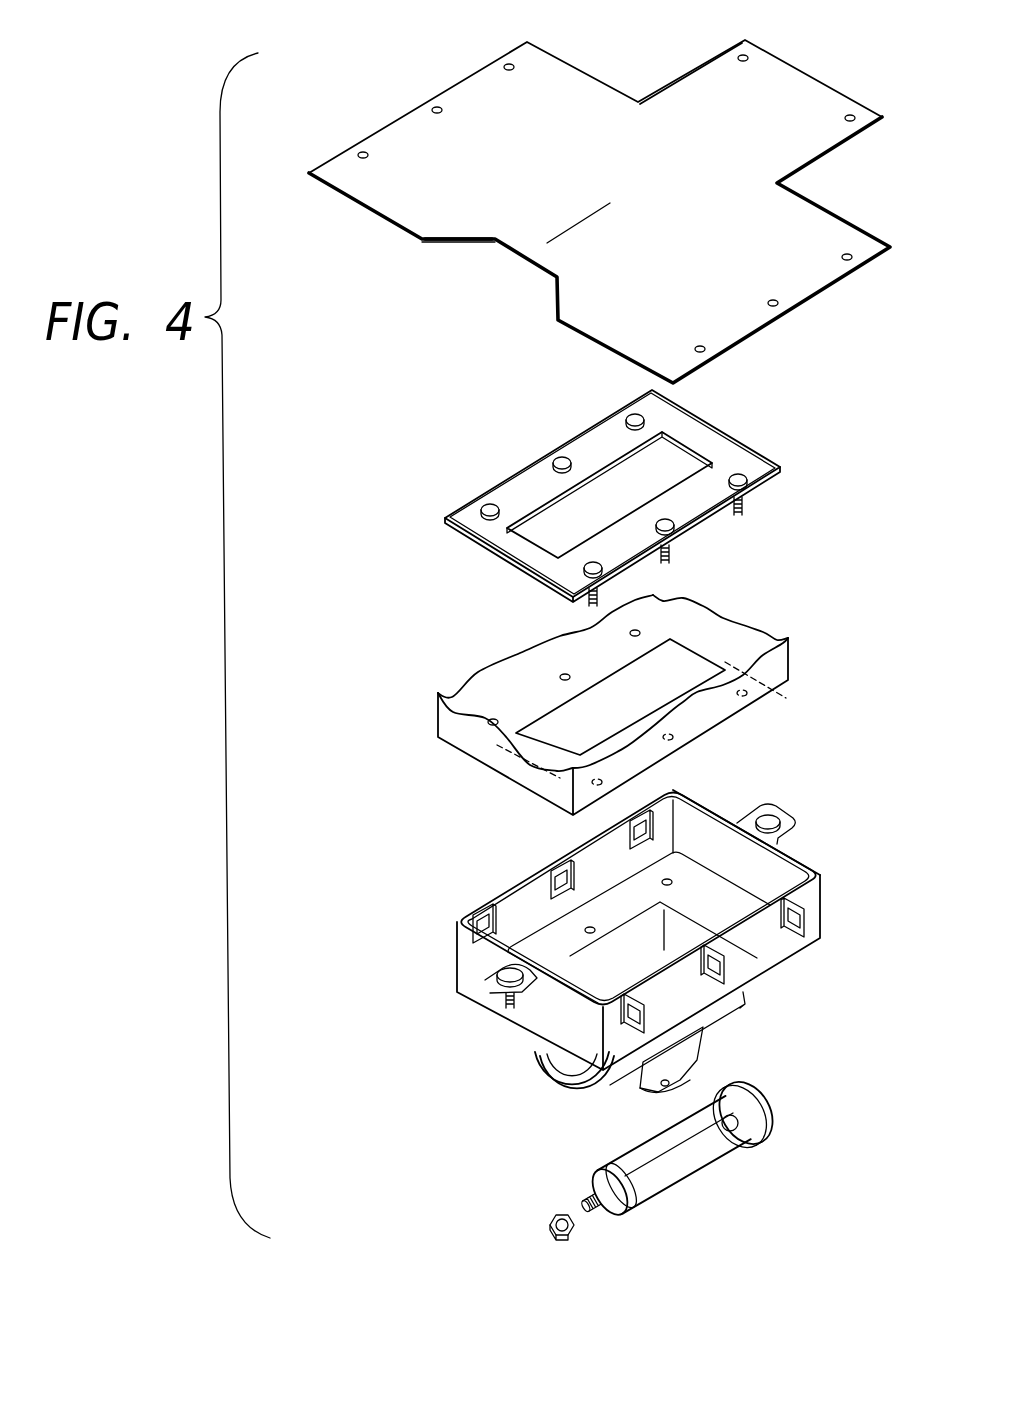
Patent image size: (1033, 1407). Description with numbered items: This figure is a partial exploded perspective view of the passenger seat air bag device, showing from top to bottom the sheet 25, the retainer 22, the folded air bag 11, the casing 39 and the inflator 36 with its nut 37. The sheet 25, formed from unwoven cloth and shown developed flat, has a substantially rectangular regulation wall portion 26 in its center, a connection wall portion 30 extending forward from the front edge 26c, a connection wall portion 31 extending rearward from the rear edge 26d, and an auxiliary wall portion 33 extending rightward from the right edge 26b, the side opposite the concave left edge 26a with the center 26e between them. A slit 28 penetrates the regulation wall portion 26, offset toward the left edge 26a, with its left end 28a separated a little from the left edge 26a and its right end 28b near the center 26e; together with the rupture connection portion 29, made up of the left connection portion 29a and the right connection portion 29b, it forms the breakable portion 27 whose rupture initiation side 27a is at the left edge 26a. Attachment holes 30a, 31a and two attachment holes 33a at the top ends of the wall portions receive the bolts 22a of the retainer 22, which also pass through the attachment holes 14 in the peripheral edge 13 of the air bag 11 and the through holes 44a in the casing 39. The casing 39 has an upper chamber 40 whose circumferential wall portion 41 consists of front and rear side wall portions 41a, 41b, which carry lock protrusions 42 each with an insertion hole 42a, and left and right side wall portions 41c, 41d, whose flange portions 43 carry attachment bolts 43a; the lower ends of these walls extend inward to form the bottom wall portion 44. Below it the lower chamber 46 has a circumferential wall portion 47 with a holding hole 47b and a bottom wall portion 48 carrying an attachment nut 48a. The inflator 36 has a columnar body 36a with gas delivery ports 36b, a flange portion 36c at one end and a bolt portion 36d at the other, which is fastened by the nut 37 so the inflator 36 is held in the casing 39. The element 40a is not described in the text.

The air bag 11 is at (770, 624).
The peripheral edge 13 is at (707, 645).
The attachment holes 14 is at (493, 720).
The retainer 22 is at (463, 560).
The bolts 22a is at (484, 505).
The sheet 25 is at (335, 298).
The regulation wall portion 26 is at (587, 237).
The left edge 26a is at (503, 250).
The right edge 26b is at (720, 128).
The front edge 26c is at (513, 163).
The rear edge 26d is at (685, 257).
The center 26e is at (535, 232).
The breakable portion 27 is at (576, 232).
The rupture initiation side 27a is at (540, 265).
The slit 28 is at (548, 240).
The left end 28a is at (538, 246).
The right end 28b is at (620, 200).
The rupture connection portion 29 is at (552, 161).
The left connection portion 29a is at (490, 241).
The right connection portion 29b is at (635, 183).
The connection wall portion 30 is at (407, 133).
The attachment holes 30a is at (505, 66).
The connection wall portion 31 is at (733, 323).
The attachment holes 31a is at (778, 302).
The auxiliary wall portion 33 is at (805, 78).
The attachment holes 33a is at (746, 56).
The inflator 36 is at (698, 1182).
The body 36a is at (655, 1092).
The gas delivery ports 36b is at (738, 1130).
The flange portion 36c is at (777, 1125).
The bolt portion 36d is at (586, 1200).
The nut 37 is at (548, 1224).
The casing 39 is at (428, 951).
The upper chamber 40 is at (800, 866).
The case rim 40a is at (713, 820).
The circumferential wall portion 41 is at (653, 969).
The front side wall portion 41a is at (520, 917).
The rear side wall portion 41b is at (815, 985).
The left side wall portion 41c is at (520, 1062).
The right side wall portion 41d is at (822, 900).
The lock protrusions 42 is at (540, 862).
The insertion hole 42a is at (650, 797).
The flange portions 43 is at (787, 813).
The attachment bolts 43a is at (782, 828).
The bottom wall portion 44 is at (550, 937).
The through holes 44a is at (660, 880).
The lower chamber 46 is at (540, 1028).
The circumferential wall portion 47 is at (737, 1008).
The holding hole 47b is at (580, 1075).
The bottom wall portion 48 is at (715, 1035).
The attachment nut 48a is at (668, 1082).